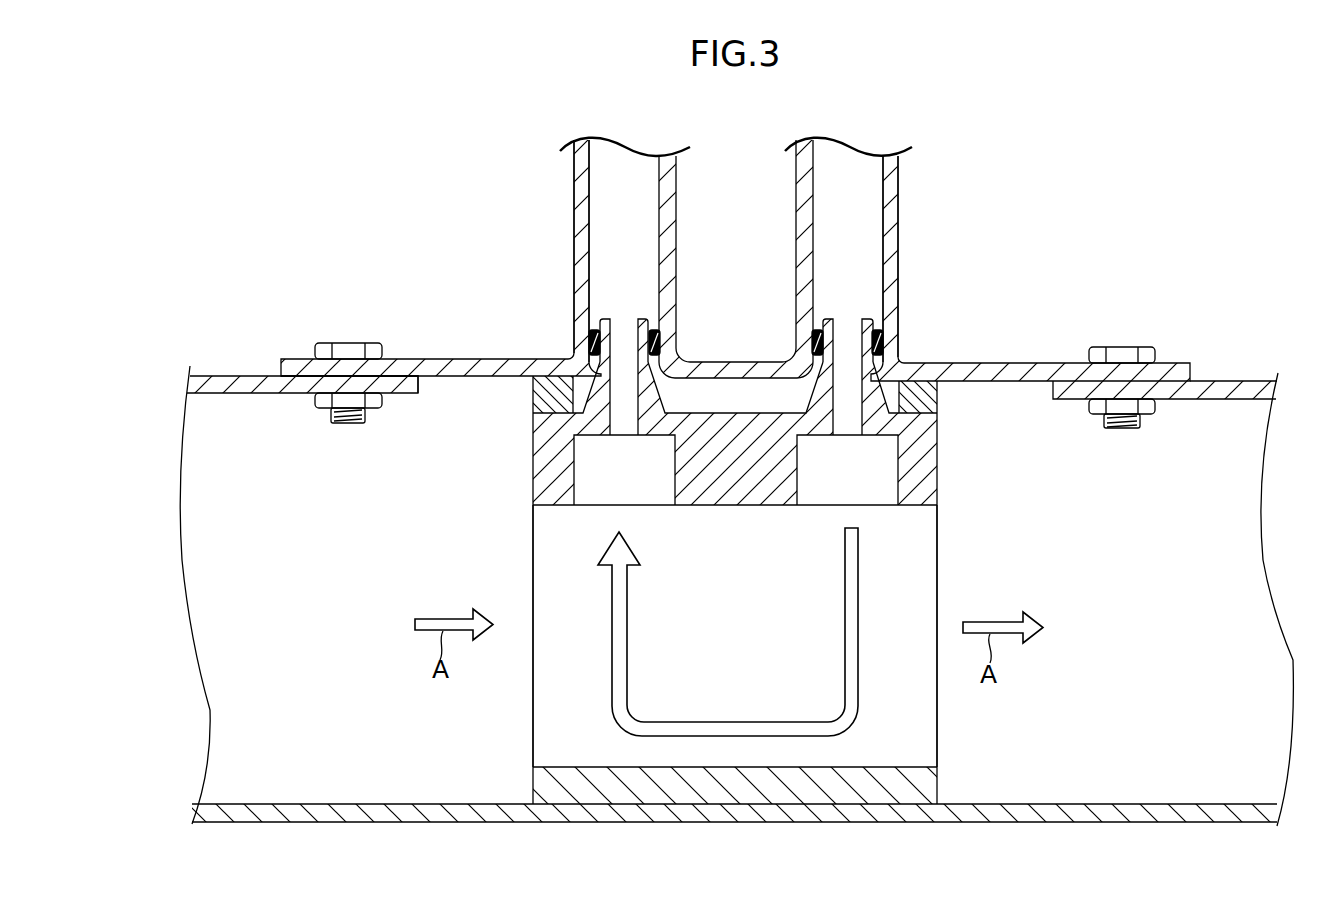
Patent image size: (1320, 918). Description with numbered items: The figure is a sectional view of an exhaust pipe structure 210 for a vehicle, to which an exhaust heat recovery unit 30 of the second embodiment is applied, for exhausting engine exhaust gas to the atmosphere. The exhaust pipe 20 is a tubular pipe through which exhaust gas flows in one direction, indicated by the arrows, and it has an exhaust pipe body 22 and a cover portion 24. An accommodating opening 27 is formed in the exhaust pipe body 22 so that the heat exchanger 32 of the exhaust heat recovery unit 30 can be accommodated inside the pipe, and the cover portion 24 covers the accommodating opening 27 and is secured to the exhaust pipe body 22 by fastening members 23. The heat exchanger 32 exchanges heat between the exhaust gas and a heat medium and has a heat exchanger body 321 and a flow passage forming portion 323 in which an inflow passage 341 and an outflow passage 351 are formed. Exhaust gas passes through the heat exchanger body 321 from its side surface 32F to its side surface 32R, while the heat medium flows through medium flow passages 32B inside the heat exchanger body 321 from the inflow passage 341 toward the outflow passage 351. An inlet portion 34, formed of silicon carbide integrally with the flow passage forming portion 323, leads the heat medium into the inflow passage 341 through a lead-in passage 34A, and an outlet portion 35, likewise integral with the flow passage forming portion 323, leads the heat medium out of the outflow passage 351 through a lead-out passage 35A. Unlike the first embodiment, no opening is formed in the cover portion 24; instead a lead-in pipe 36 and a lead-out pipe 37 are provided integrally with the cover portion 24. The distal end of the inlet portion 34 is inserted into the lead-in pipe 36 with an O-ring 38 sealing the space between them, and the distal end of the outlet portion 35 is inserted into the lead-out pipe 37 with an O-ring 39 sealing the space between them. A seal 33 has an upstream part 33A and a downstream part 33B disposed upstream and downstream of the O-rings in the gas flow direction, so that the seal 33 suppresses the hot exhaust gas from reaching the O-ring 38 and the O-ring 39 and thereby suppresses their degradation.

The exhaust pipe structure 210 is at (246, 202).
The exhaust pipe 20 is at (219, 361).
The exhaust pipe body 22 is at (271, 387).
The fastening members 23 is at (347, 344).
The cover portion 24 is at (477, 367).
The accommodating opening 27 is at (427, 376).
The exhaust heat recovery unit 30 is at (926, 197).
The heat exchanger 32 is at (453, 447).
The medium flow passages 32B is at (793, 730).
The side surface 32F is at (533, 704).
The side surface 32R is at (940, 705).
The heat exchanger body 321 is at (543, 543).
The flow passage forming portion 323 is at (521, 413).
The seal 33 is at (930, 792).
The upstream part 33A is at (545, 390).
The downstream part 33B is at (930, 393).
The inlet portion 34 is at (897, 362).
The lead-in passage 34A is at (827, 342).
The outlet portion 35 is at (601, 361).
The lead-out passage 35A is at (647, 325).
The lead-in pipe 36 is at (803, 168).
The lead-out pipe 37 is at (581, 191).
The O-ring 38 is at (878, 327).
The O-ring 39 is at (594, 330).
The inflow passage 341 is at (878, 505).
The outflow passage 351 is at (657, 485).